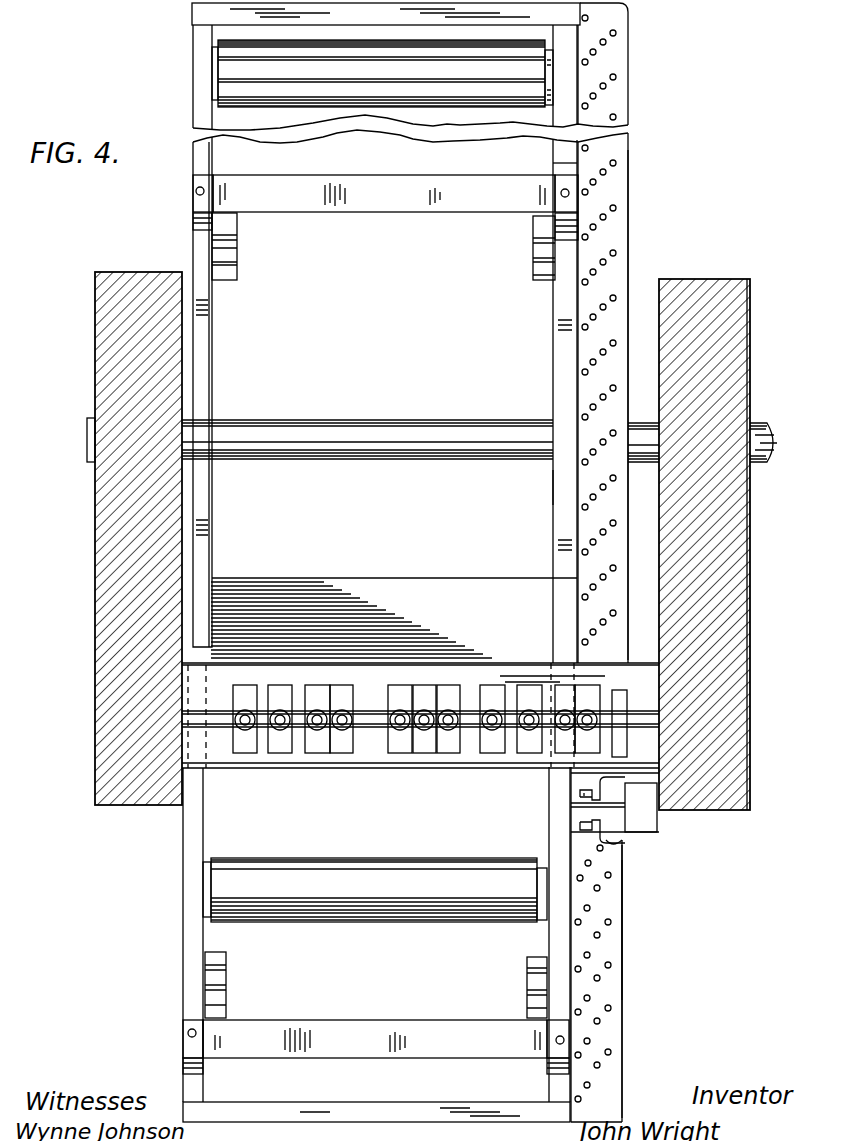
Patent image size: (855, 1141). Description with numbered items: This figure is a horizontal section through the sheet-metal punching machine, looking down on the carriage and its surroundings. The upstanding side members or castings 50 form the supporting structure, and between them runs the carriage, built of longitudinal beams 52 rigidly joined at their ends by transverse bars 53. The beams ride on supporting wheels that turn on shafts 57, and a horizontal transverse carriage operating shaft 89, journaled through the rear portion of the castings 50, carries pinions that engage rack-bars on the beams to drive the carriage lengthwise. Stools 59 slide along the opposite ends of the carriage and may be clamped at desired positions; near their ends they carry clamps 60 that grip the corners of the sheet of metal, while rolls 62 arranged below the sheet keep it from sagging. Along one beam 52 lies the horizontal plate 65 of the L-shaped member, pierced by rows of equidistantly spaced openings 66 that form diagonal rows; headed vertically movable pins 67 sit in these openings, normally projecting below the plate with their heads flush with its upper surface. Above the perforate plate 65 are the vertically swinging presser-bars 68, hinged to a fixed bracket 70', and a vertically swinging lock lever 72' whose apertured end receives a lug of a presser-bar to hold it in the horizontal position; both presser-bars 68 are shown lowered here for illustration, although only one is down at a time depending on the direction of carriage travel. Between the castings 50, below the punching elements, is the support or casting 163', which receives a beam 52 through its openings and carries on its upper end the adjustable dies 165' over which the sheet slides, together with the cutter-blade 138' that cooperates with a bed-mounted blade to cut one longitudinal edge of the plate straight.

The side members or castings 50 is at (93, 527).
The longitudinal beams 52 is at (207, 390).
The transverse bars 53 is at (199, 14).
The shafts 57 is at (545, 491).
The stools 59 is at (400, 206).
The clamps 60 is at (228, 235).
The rolls 62 is at (235, 66).
The horizontal portion or plate 65 is at (607, 193).
The openings 66 is at (614, 162).
The pins 67 is at (624, 962).
The presser-bars 68 is at (575, 800).
The fixed bracket 70' is at (647, 811).
The lock lever 72' is at (647, 871).
The carriage operating shaft 89 is at (362, 420).
The cutter-blade 138' is at (496, 739).
The support or casting 163' is at (394, 604).
The dies 165' is at (430, 682).